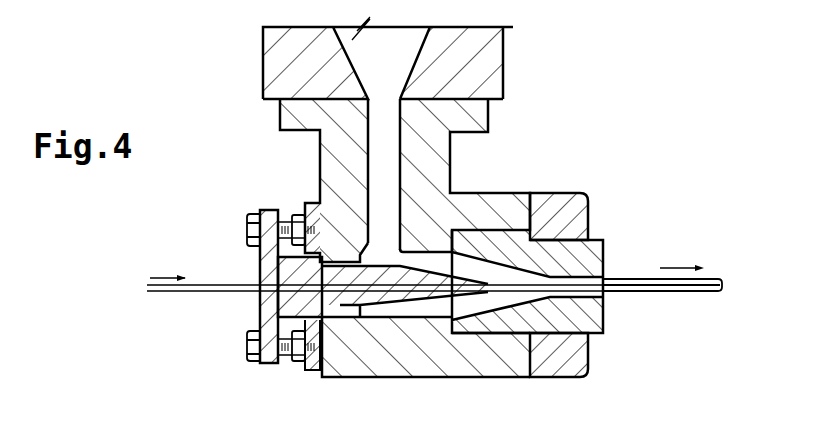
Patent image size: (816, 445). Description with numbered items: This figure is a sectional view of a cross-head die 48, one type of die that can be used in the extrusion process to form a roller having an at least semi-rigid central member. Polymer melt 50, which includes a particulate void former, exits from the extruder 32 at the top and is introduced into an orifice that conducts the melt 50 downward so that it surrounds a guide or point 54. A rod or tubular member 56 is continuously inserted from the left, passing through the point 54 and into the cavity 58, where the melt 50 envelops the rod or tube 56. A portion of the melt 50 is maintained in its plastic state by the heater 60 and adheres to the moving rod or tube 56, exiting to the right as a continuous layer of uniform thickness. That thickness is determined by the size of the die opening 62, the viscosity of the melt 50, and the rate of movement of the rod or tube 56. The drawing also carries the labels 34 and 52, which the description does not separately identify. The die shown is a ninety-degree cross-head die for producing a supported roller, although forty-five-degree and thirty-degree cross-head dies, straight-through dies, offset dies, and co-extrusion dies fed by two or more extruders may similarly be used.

The extruder 32 is at (503, 49).
The extrusion assembly 34 is at (258, 124).
The die 48 is at (451, 170).
The polymer melt 50 is at (369, 73).
The die body left portion 52 is at (362, 140).
The guide or point 54 is at (259, 305).
The rod or tubular member 56 is at (168, 292).
The cavity 58 is at (463, 302).
The heater 60 is at (590, 196).
The die opening 62 is at (608, 267).